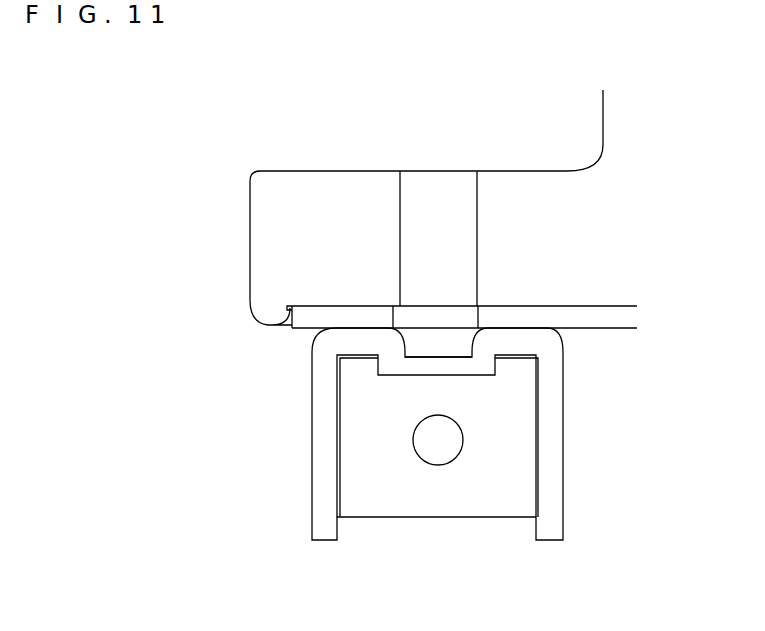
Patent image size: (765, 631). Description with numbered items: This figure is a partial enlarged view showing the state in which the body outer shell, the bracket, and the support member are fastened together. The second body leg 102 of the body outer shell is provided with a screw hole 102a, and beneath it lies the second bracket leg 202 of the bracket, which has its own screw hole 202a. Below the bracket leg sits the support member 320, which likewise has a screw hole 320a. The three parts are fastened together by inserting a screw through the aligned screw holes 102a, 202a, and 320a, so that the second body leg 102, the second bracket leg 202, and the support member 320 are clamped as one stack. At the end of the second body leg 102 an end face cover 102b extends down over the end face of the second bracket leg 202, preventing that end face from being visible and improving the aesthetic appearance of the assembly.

The second body leg 102 is at (300, 170).
The screw hole 102a is at (437, 171).
The end face cover 102b is at (263, 313).
The second bracket leg 202 is at (308, 321).
The screw hole 202a is at (445, 312).
The support member 320 is at (562, 468).
The screw hole 320a is at (440, 365).